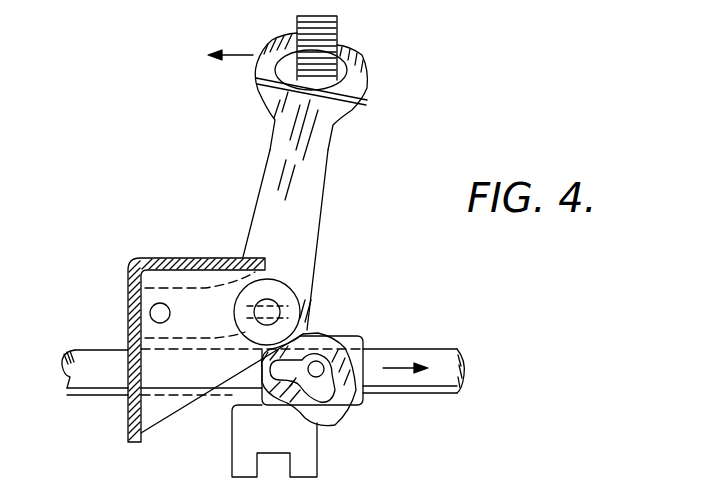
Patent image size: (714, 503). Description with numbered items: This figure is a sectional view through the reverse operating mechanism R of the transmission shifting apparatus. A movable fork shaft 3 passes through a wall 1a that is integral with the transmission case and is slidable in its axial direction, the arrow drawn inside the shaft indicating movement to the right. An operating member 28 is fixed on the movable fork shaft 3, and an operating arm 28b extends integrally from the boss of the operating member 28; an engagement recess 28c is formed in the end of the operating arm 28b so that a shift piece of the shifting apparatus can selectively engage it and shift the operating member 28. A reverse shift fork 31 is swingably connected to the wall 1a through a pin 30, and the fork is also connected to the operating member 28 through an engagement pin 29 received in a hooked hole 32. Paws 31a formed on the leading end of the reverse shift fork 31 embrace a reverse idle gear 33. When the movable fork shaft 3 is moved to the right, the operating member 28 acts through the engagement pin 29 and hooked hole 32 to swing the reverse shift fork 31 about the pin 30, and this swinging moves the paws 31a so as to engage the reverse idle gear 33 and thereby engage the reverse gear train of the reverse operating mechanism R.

The wall 1a is at (204, 258).
The movable fork shaft 3 is at (440, 350).
The operating member 28 is at (363, 342).
The operating arm 28b is at (311, 452).
The engagement recess 28c is at (290, 470).
The engagement pin 29 is at (317, 361).
The pin 30 is at (240, 303).
The reverse shift fork 31 is at (325, 176).
The paws 31a is at (366, 86).
The hooked hole 32 is at (289, 390).
The reverse idle gear 33 is at (337, 27).
The reverse operating mechanism R is at (357, 289).